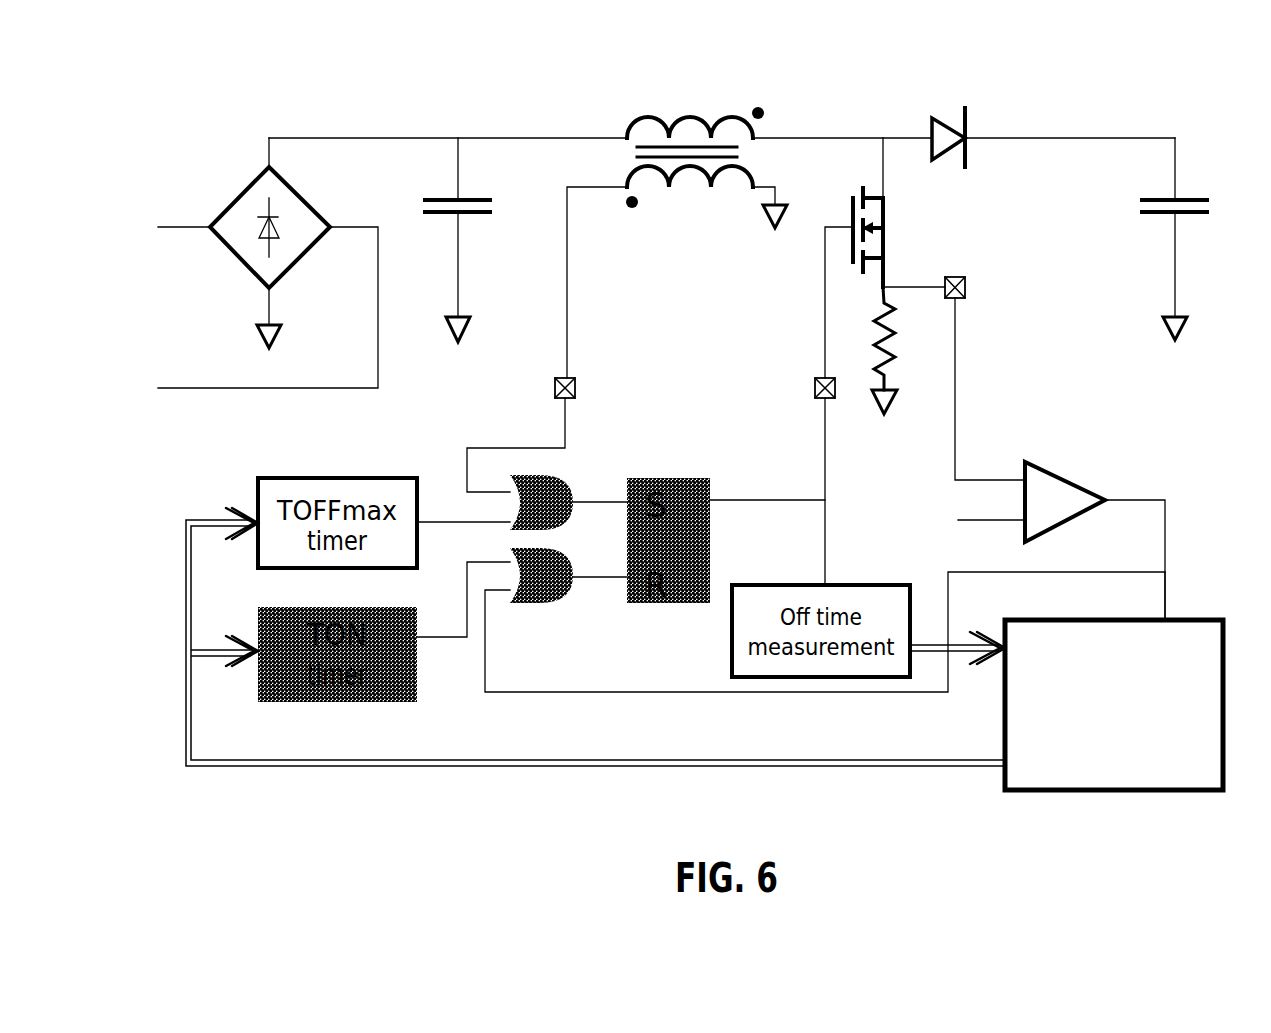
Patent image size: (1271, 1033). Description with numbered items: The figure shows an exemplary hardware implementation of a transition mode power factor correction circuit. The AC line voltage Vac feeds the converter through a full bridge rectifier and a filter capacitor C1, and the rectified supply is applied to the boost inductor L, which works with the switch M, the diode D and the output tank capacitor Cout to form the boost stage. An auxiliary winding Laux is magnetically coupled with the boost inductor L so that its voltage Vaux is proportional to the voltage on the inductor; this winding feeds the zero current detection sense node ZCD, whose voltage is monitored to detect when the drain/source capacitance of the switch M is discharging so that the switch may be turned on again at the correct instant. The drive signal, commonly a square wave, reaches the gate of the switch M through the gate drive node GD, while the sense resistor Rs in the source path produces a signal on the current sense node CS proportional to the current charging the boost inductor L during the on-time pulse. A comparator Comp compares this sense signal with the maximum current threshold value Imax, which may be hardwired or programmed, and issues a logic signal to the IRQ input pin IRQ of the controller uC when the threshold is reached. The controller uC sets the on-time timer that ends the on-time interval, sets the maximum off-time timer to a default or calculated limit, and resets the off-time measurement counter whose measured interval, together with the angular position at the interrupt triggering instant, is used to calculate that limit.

The AC line voltage Vac is at (268, 307).
The filter capacitor C1 is at (451, 240).
The boost inductor L is at (695, 116).
The auxiliary winding Laux is at (707, 214).
The auxiliary winding voltage Vaux is at (608, 282).
The diode D is at (948, 120).
The output tank capacitor Cout is at (1203, 239).
The switch M is at (885, 361).
The sense resistor Rs is at (910, 350).
The current sense node CS is at (985, 377).
The gate drive node GD is at (803, 379).
The zero current detection sense node ZCD is at (560, 430).
The comparator Comp is at (1095, 522).
The maximum current threshold value Imax is at (955, 509).
The IRQ input pin IRQ is at (1138, 597).
The controller uC is at (1114, 705).